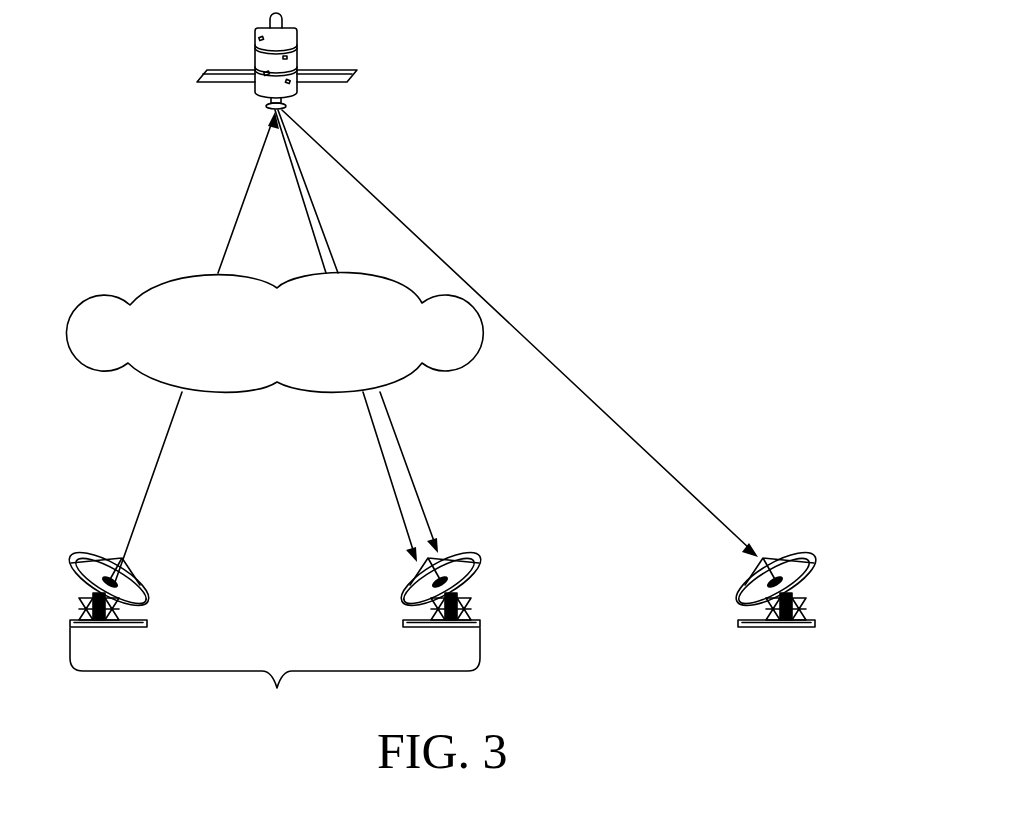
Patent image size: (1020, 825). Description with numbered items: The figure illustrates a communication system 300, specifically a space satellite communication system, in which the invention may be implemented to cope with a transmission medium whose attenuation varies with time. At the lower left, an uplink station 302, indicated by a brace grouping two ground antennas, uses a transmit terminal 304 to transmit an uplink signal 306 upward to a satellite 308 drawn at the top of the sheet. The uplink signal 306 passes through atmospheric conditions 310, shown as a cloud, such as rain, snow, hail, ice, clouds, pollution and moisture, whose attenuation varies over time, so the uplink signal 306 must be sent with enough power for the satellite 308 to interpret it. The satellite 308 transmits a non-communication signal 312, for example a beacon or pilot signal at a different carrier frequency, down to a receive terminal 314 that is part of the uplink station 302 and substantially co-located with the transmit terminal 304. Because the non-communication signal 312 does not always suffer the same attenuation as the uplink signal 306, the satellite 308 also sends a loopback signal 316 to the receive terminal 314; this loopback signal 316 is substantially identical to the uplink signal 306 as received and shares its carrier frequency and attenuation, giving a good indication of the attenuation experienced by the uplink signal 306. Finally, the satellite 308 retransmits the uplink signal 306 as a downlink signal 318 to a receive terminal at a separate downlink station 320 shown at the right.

The communication system 300 is at (790, 38).
The uplink station 302 is at (315, 635).
The transmit terminal 304 is at (148, 624).
The uplink signal 306 is at (160, 448).
The satellite 308 is at (352, 72).
The atmospheric conditions 310 is at (298, 348).
The non-communication signal 312 is at (386, 471).
The receive terminal 314 is at (481, 624).
The loopback signal 316 is at (407, 470).
The downlink signal 318 is at (603, 398).
The downlink station 320 is at (737, 624).